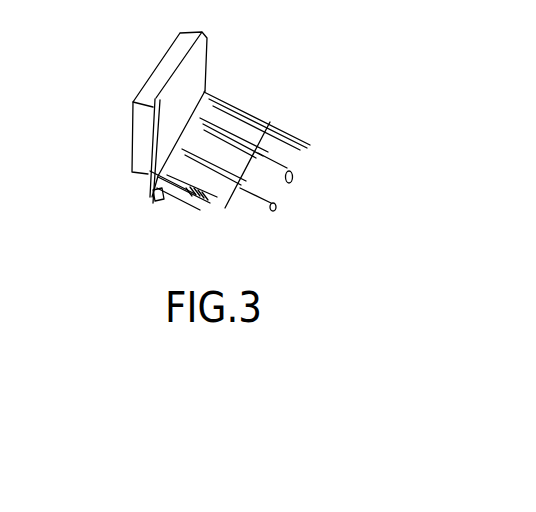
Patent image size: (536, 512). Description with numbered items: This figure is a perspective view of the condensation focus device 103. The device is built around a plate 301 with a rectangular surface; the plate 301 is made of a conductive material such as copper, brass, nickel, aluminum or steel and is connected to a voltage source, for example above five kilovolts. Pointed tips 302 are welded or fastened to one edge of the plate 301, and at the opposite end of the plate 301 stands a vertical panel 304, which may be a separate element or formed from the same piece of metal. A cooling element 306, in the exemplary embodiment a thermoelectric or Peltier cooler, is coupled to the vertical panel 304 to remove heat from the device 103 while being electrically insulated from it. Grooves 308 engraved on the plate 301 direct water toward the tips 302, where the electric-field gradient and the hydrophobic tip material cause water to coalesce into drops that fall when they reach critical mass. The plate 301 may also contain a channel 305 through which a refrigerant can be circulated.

The condensation focus device 103 is at (256, 141).
The plate 301 is at (254, 96).
The pointed tips 302 is at (298, 120).
The vertical panel 304 is at (213, 52).
The channel 305 is at (166, 210).
The cooling element 306 is at (124, 143).
The grooves 308 is at (210, 214).